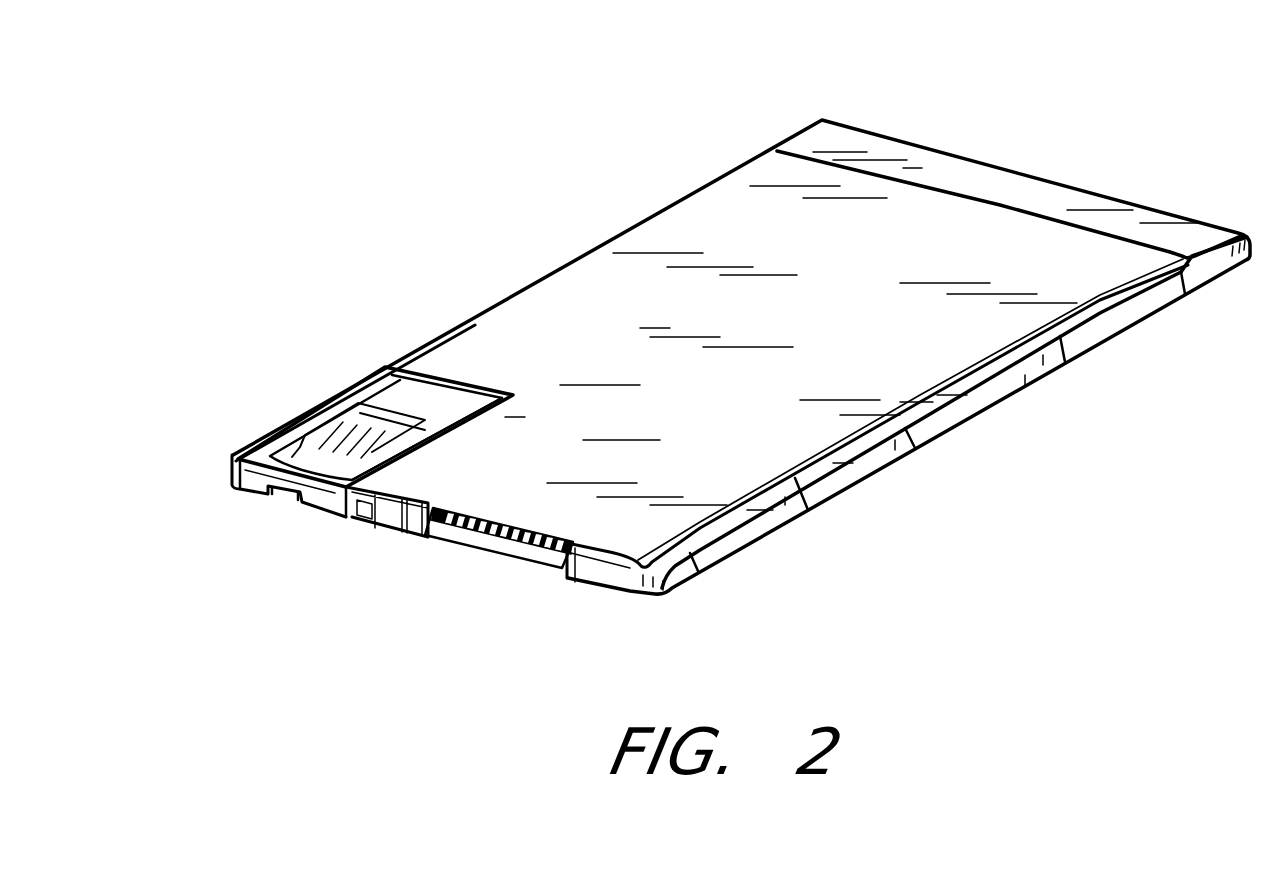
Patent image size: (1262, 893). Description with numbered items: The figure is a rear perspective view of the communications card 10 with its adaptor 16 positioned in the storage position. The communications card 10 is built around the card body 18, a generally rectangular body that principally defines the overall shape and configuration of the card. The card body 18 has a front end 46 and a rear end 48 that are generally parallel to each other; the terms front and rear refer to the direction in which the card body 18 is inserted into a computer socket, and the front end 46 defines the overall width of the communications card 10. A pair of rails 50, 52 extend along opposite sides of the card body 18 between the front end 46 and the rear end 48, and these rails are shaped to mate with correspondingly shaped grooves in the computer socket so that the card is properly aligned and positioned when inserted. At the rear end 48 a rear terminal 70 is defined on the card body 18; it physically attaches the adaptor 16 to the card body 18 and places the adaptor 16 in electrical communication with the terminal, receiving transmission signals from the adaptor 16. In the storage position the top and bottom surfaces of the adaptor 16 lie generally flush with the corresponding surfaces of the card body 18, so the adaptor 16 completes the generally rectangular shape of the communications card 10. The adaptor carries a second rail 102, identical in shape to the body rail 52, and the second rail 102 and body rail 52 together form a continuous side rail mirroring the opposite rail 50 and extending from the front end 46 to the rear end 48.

The communications card 10 is at (1068, 485).
The adaptor 16 is at (382, 392).
The card body 18 is at (723, 213).
The front end 46 is at (1107, 134).
The rear end 48 is at (522, 586).
The rail 50 is at (740, 540).
The rail 52 is at (512, 292).
The rear terminal 70 is at (438, 543).
The second rail 102 is at (238, 452).